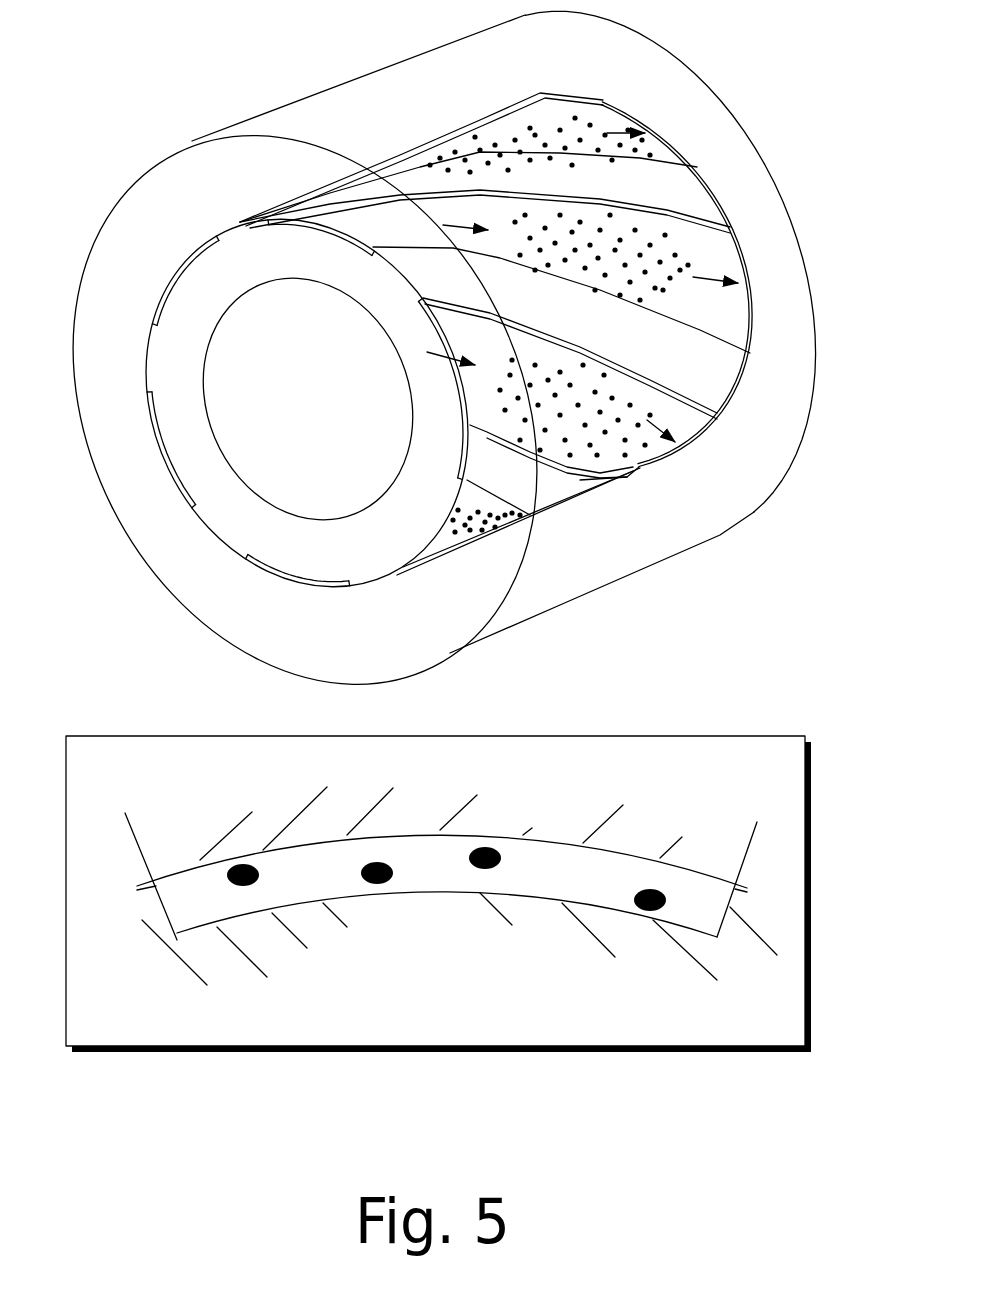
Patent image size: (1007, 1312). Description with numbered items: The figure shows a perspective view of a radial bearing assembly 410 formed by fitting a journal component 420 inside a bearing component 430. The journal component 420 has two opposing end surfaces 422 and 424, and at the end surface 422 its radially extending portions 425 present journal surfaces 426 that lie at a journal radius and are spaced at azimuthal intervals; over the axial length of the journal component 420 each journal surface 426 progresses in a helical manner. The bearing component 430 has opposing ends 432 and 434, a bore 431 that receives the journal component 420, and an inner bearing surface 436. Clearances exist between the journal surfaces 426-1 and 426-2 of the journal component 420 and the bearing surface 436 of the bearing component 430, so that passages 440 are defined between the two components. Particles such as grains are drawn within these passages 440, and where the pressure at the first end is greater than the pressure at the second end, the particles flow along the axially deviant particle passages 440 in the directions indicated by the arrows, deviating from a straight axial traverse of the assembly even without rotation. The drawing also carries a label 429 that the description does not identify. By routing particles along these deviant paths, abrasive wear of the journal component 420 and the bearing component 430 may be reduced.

The radial bearing assembly 410 is at (226, 52).
The journal component 420 is at (193, 257).
The end surface 422 is at (377, 553).
The end surface 424 is at (673, 143).
The radially extending portions 425 is at (397, 277).
The journal surfaces 426 is at (711, 373).
The journal surface 426-1 is at (125, 813).
The journal surface 426-2 is at (757, 822).
The flow passage 429 is at (734, 323).
The bearing component 430 is at (400, 58).
The bore 431 is at (158, 529).
The end 432 is at (397, 646).
The end 434 is at (781, 480).
The bearing surface 436 is at (317, 588).
The passages 440 is at (592, 880).